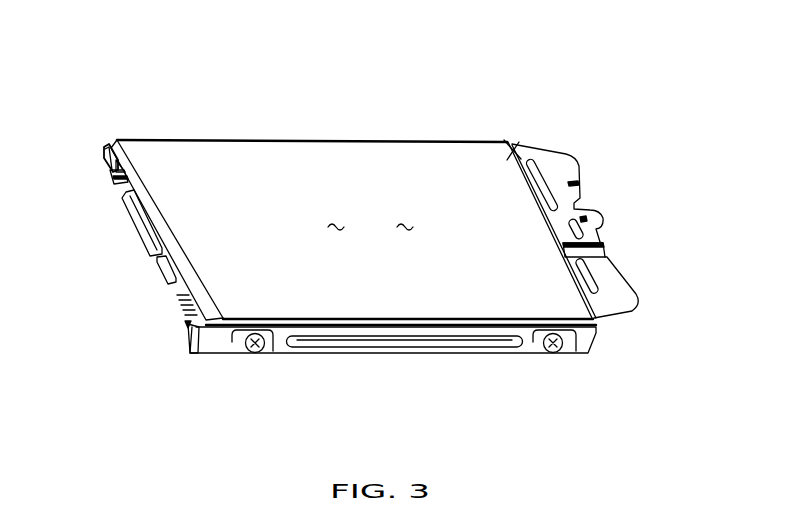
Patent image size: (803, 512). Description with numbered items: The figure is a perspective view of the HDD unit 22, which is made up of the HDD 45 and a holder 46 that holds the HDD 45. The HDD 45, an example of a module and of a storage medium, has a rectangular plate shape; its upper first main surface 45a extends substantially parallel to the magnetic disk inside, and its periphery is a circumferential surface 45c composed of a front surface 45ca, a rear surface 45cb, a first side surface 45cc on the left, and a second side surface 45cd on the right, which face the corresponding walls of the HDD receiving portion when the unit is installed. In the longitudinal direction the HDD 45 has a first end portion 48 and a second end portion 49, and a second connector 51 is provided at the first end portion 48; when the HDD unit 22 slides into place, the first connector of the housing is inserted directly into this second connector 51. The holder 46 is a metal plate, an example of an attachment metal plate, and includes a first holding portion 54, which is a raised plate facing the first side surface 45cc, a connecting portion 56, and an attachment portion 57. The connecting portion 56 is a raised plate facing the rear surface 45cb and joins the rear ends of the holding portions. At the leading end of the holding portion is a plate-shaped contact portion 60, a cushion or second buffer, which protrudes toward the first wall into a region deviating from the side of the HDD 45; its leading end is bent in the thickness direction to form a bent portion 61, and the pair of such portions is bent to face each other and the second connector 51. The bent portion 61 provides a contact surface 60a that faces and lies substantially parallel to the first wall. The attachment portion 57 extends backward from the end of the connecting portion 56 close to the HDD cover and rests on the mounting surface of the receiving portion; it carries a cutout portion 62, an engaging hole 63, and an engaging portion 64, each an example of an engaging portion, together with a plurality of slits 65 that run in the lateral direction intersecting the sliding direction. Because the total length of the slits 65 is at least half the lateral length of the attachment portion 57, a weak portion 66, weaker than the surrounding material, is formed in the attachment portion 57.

The HDD unit 22 is at (457, 97).
The HDD 45 is at (353, 207).
The first main surface 45a is at (370, 225).
The circumferential surface 45c is at (127, 168).
The front surface 45ca is at (160, 235).
The rear surface 45cb is at (542, 223).
The first side surface 45cc is at (325, 321).
The second side surface 45cd is at (288, 139).
The holder 46 is at (378, 357).
The first end portion 48 is at (189, 280).
The second end portion 49 is at (519, 150).
The second connector 51 is at (140, 224).
The first holding portion 54 is at (279, 351).
The connecting portion 56 is at (597, 318).
The attachment portion 57 is at (610, 231).
The contact portion 60 is at (134, 254).
The contact surface 60a is at (112, 185).
The bent portion 61 is at (105, 157).
The cutout portion 62 is at (599, 228).
The engaging hole 63 is at (605, 249).
The engaging portion 64 is at (579, 190).
The slit 65 is at (540, 163).
The weak portion 66 is at (568, 262).